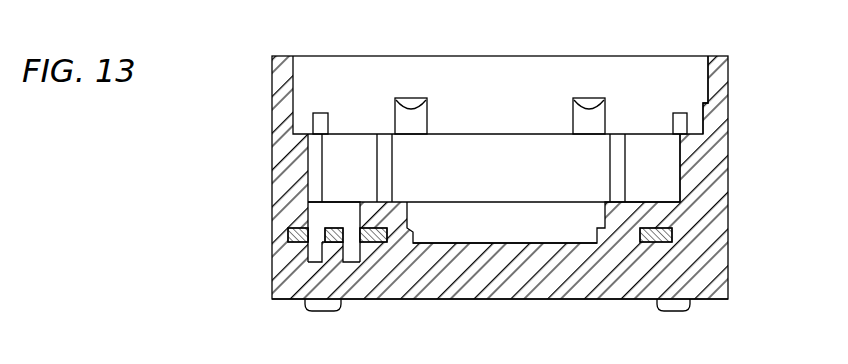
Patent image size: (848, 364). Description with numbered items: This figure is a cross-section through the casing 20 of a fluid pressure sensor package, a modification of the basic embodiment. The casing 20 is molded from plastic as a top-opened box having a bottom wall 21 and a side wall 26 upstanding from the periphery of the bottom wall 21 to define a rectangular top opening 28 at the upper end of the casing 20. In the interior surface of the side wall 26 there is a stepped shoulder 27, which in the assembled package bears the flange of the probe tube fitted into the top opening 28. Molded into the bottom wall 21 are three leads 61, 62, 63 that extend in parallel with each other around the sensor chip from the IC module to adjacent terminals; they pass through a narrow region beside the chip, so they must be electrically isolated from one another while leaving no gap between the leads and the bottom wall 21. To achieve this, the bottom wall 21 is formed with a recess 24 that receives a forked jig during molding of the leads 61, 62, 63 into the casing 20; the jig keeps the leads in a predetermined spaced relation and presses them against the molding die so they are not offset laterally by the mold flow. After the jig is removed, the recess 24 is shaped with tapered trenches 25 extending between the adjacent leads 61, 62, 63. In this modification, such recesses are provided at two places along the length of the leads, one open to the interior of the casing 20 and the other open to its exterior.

The casing 20 is at (273, 298).
The bottom wall 21 is at (524, 285).
The recess 24 is at (318, 217).
The tapered trenches 25 is at (312, 262).
The side wall 26 is at (720, 175).
The stepped shoulder 27 is at (306, 132).
The top opening 28 is at (610, 68).
The lead 61 is at (292, 243).
The lead 62 is at (335, 243).
The lead 63 is at (378, 243).